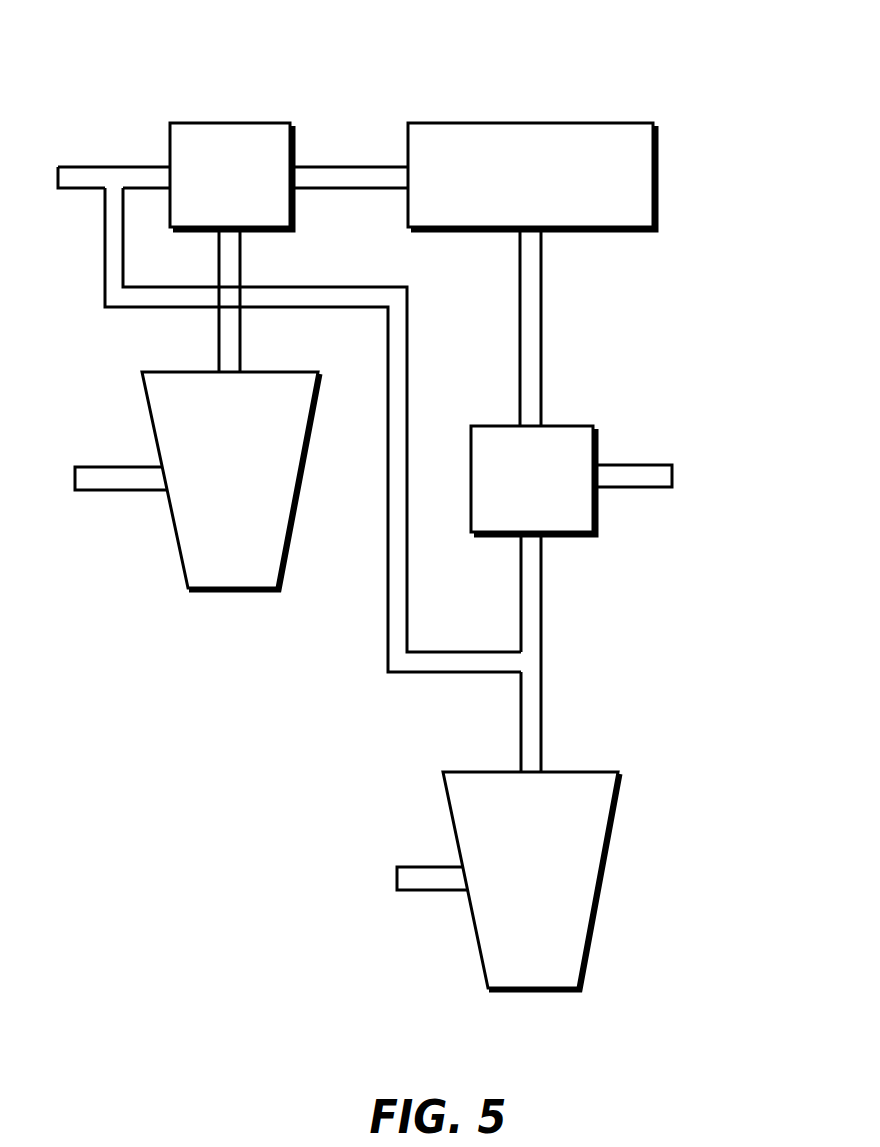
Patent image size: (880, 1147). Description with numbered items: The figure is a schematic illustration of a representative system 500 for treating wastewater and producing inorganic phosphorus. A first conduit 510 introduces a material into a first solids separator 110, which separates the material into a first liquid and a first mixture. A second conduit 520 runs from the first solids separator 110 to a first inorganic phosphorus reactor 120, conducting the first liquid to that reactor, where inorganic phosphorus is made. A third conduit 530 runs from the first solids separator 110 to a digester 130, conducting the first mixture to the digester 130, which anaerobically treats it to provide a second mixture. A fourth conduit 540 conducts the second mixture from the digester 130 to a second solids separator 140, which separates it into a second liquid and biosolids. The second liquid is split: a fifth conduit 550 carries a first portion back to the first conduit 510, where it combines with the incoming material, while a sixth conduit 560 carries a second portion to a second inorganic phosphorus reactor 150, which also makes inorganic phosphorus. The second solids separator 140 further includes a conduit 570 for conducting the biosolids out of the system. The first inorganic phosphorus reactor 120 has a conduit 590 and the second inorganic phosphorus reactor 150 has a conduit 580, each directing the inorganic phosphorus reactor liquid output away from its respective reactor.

The system 500 is at (730, 104).
The first solids separator 110 is at (208, 187).
The first inorganic phosphorus reactor 120 is at (208, 491).
The digester 130 is at (510, 187).
The second solids separator 140 is at (510, 491).
The second inorganic phosphorus reactor 150 is at (510, 892).
The first conduit 510 is at (132, 165).
The second conduit 520 is at (242, 257).
The third conduit 530 is at (350, 166).
The fourth conduit 540 is at (540, 320).
The fifth conduit 550 is at (407, 380).
The sixth conduit 560 is at (522, 708).
The conduit 570 is at (633, 473).
The conduit 580 is at (408, 867).
The conduit 590 is at (108, 463).